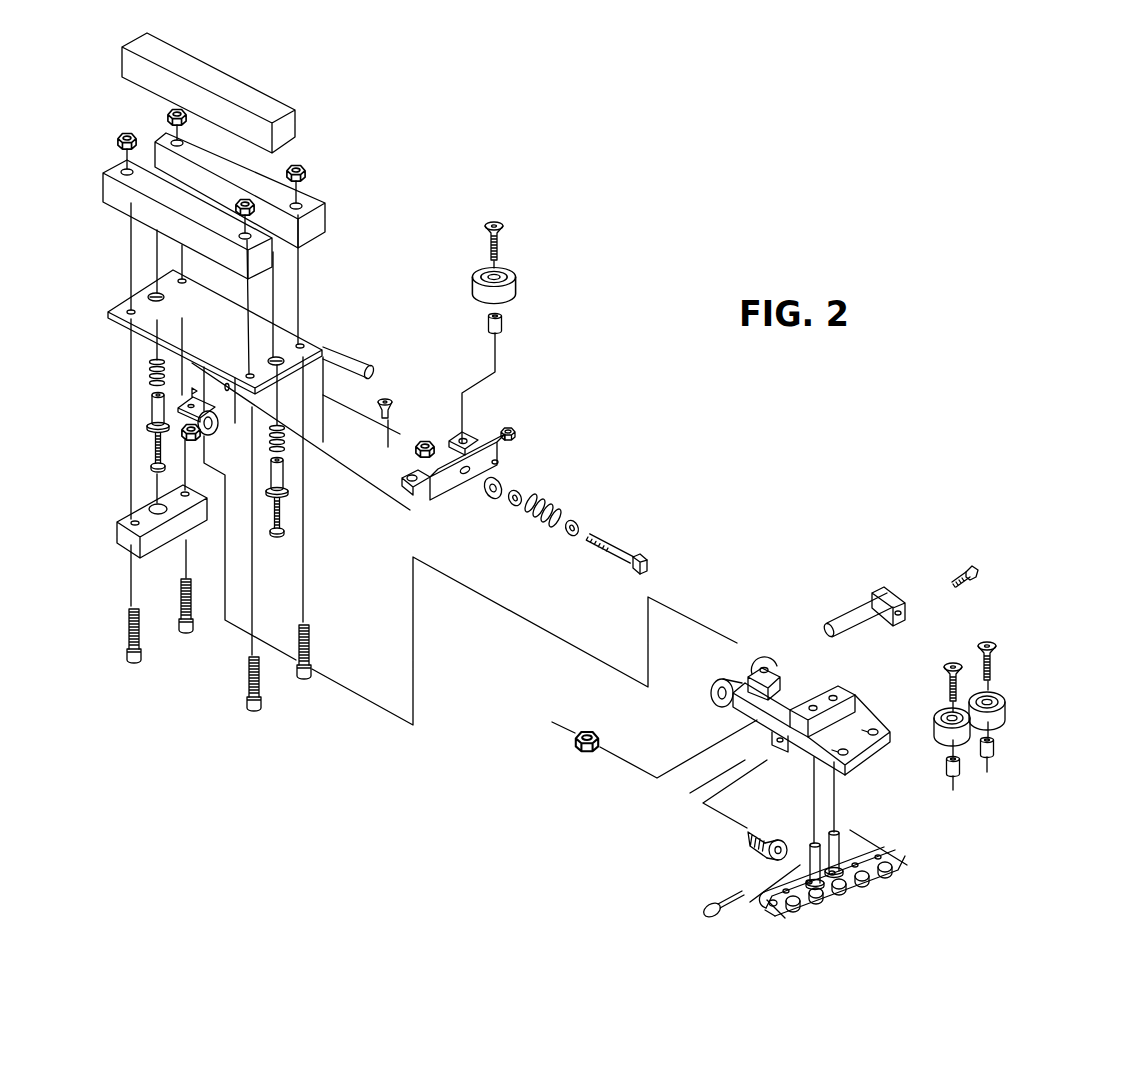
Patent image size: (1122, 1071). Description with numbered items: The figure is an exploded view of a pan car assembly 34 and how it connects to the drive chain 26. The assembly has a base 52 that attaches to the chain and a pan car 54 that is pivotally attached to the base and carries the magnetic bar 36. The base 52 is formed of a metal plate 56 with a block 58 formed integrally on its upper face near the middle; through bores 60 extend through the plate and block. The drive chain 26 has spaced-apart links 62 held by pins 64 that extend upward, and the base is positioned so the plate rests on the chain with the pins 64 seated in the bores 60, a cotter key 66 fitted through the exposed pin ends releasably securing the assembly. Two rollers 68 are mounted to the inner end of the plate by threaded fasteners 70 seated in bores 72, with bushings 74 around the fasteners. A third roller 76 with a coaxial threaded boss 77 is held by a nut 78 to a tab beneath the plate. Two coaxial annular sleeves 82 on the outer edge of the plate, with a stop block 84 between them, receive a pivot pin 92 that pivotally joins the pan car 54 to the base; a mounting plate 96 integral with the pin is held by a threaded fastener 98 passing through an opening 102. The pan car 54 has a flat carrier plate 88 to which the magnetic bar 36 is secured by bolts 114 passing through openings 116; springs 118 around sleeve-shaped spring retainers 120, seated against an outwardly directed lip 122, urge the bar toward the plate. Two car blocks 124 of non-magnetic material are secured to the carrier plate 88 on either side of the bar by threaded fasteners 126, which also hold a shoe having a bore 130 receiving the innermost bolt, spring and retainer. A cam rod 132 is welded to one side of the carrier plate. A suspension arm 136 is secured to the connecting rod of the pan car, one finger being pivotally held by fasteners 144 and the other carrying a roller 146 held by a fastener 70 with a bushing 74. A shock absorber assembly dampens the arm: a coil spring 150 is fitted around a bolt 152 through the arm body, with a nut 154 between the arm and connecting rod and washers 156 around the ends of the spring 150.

The magnetic bar 36 is at (242, 96).
The car blocks 124 is at (177, 160).
The nut 78 is at (312, 170).
The openings 116 is at (152, 294).
The carrier plate 88 is at (210, 335).
The cam rod 132 is at (353, 364).
The springs 118 is at (152, 370).
The spring retainers 120 is at (152, 412).
The bolts 114 is at (150, 455).
The lip 122 is at (286, 507).
The bore 130 is at (152, 500).
The threaded fasteners 126 is at (214, 657).
The fasteners 144 is at (392, 394).
The nut 154 is at (421, 437).
The threaded fasteners 70 is at (506, 232).
The roller 146 is at (508, 287).
The bushings 74 is at (505, 323).
The pan car 54 is at (535, 383).
The suspension arm 136 is at (497, 463).
The washers 156 is at (522, 496).
The coil spring 150 is at (562, 514).
The bolt 152 is at (634, 558).
The pan car assembly 34 is at (820, 485).
The base 52 is at (668, 797).
The plate 56 is at (780, 703).
The block 58 is at (858, 703).
The through bores 60 is at (852, 692).
The bores 72 is at (895, 765).
The annular sleeves 82 is at (764, 655).
The stop block 84 is at (768, 671).
The pivot pin 92 is at (838, 622).
The mounting plate 96 is at (892, 593).
The opening 102 is at (902, 612).
The threaded fastener 98 is at (994, 589).
The rollers 68 is at (1005, 706).
The threaded boss 77 is at (752, 832).
The third roller 76 is at (768, 858).
The pins 64 is at (838, 840).
The links 62 is at (856, 893).
The drive chain 26 is at (798, 914).
The cotter key 66 is at (700, 914).